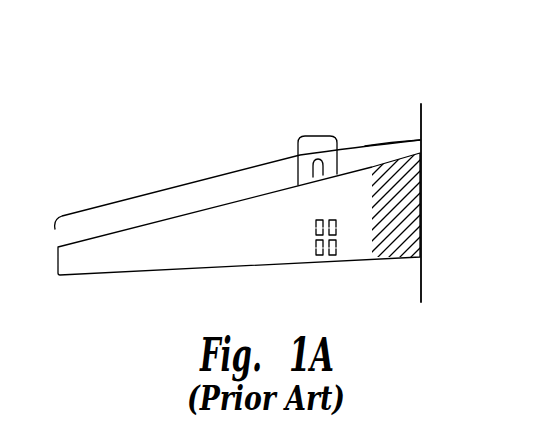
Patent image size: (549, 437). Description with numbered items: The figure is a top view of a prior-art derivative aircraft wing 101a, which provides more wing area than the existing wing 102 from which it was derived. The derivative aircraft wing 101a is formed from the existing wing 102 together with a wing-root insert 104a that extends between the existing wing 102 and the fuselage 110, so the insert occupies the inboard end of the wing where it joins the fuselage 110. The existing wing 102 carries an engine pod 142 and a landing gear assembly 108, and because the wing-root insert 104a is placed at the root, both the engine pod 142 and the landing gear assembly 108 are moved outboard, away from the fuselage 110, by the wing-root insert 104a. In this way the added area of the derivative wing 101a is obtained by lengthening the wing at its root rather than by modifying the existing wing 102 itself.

The derivative aircraft wing 101a is at (137, 91).
The existing wing 102 is at (204, 179).
The wing-root insert 104a is at (419, 143).
The landing gear assembly 108 is at (314, 243).
The fuselage 110 is at (421, 104).
The engine pod 142 is at (301, 139).